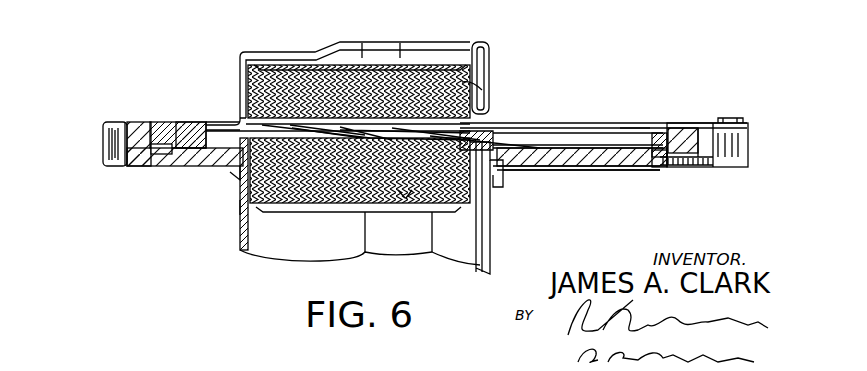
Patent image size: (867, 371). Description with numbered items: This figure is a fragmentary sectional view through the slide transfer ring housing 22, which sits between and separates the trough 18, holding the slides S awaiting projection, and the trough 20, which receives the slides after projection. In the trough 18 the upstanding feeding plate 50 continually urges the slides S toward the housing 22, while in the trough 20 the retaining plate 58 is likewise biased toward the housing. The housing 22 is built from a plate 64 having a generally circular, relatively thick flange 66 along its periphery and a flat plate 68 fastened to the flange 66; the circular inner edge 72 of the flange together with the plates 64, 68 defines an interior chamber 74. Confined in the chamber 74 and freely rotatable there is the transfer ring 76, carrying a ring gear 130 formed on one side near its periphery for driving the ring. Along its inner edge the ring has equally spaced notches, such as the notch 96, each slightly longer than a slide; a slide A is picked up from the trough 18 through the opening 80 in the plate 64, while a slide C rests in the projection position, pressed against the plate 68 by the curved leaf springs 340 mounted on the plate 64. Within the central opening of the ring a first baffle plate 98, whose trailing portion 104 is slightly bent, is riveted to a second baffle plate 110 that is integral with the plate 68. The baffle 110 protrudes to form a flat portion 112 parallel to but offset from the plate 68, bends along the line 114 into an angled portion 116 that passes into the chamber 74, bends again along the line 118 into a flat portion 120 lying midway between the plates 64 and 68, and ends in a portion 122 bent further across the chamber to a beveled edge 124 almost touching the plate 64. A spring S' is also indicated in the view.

The trough 18 is at (240, 240).
The trough 20 is at (240, 62).
The slide transfer ring housing 22 is at (106, 138).
The feeding plate 50 is at (326, 208).
The retaining plate 58 is at (275, 68).
The plate 64 is at (196, 158).
The flange 66 is at (135, 135).
The flat plate 68 is at (166, 125).
The inner edge 72 is at (157, 152).
The interior chamber 74 is at (600, 133).
The transfer ring 76 is at (183, 132).
The opening 80 is at (484, 195).
The notch 96 is at (657, 167).
The first baffle plate 98 is at (345, 137).
The trailing portion 104 is at (237, 163).
The second baffle plate 110 is at (364, 122).
The flat portion 112 is at (250, 95).
The bend line 114 is at (329, 117).
The angled portion 116 is at (380, 124).
The bend line 118 is at (411, 130).
The flat portion 120 is at (453, 130).
The terminal portion 122 is at (500, 140).
The beveled edge 124 is at (546, 167).
The ring gear 130 is at (712, 167).
The curved leaf springs 340 is at (657, 136).
The slide A is at (240, 207).
The slide C is at (630, 131).
The slides S is at (404, 218).
The spring S' is at (490, 63).